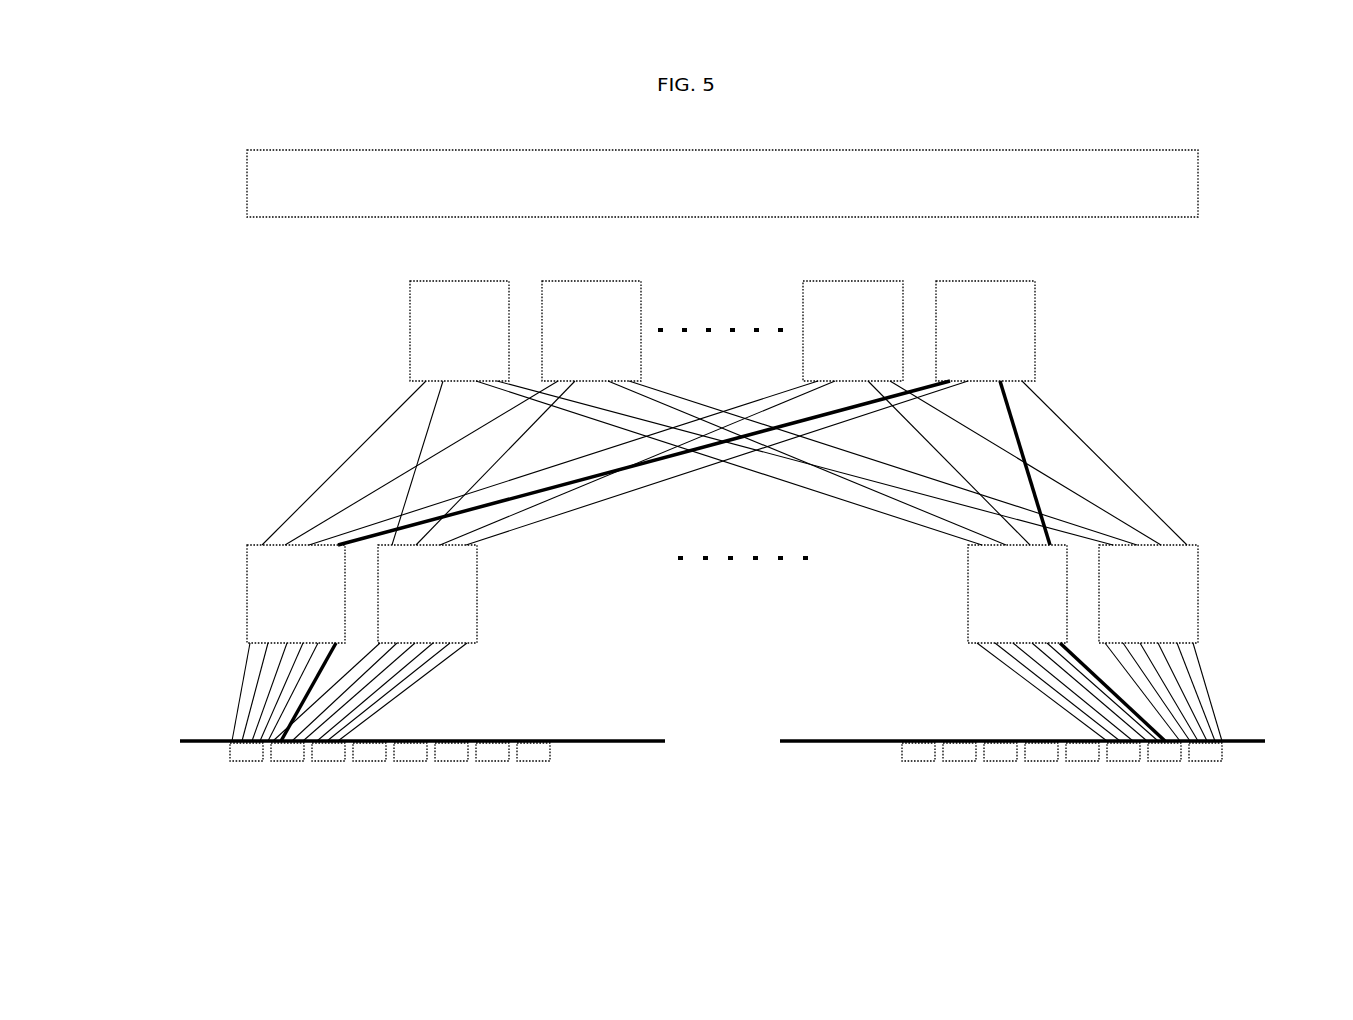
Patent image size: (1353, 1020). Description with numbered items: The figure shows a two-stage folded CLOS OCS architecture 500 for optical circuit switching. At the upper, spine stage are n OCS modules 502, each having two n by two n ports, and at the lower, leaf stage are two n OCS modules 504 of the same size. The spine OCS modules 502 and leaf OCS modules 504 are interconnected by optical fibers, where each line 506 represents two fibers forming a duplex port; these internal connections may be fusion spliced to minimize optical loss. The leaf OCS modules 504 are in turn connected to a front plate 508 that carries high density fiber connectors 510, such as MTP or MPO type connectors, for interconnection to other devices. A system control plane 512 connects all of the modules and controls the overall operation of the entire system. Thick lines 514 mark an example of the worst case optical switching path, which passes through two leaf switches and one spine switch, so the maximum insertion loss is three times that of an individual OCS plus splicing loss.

The 2-stage folded CLOS OCS architecture 500 is at (817, 125).
The spine OCS module 502 is at (1037, 303).
The leaf OCS module 504 is at (1200, 572).
The line 506 is at (368, 436).
The front plate 508 is at (1265, 741).
The high density fiber connector 510 is at (228, 748).
The system control plane 512 is at (985, 150).
The thick line 514 is at (345, 530).